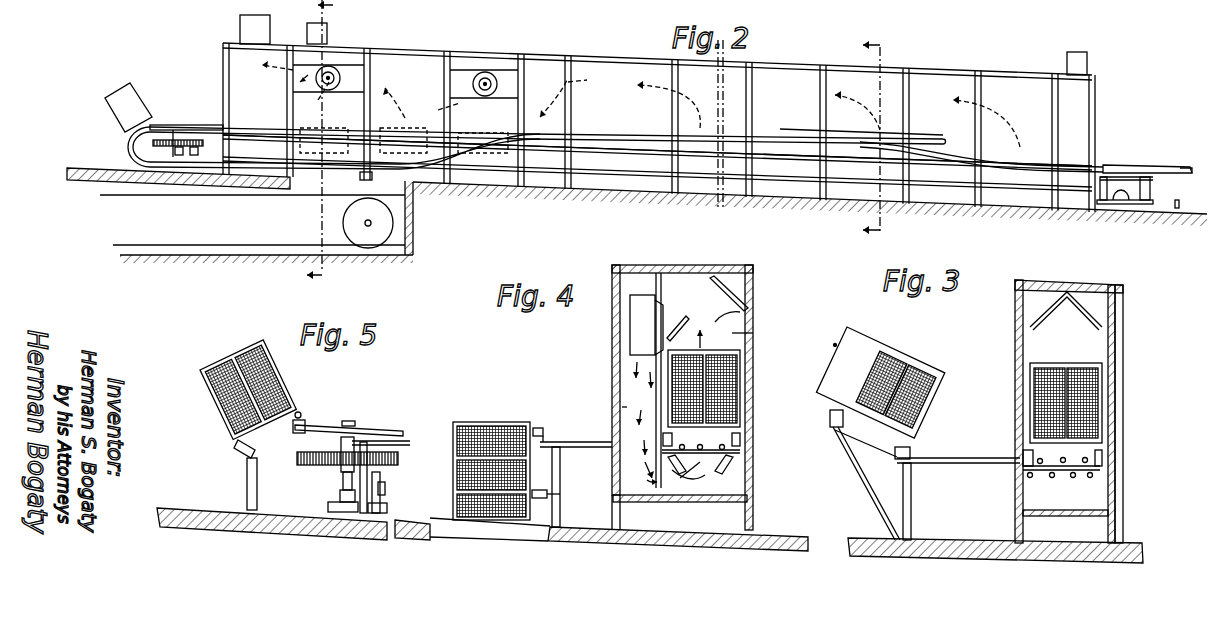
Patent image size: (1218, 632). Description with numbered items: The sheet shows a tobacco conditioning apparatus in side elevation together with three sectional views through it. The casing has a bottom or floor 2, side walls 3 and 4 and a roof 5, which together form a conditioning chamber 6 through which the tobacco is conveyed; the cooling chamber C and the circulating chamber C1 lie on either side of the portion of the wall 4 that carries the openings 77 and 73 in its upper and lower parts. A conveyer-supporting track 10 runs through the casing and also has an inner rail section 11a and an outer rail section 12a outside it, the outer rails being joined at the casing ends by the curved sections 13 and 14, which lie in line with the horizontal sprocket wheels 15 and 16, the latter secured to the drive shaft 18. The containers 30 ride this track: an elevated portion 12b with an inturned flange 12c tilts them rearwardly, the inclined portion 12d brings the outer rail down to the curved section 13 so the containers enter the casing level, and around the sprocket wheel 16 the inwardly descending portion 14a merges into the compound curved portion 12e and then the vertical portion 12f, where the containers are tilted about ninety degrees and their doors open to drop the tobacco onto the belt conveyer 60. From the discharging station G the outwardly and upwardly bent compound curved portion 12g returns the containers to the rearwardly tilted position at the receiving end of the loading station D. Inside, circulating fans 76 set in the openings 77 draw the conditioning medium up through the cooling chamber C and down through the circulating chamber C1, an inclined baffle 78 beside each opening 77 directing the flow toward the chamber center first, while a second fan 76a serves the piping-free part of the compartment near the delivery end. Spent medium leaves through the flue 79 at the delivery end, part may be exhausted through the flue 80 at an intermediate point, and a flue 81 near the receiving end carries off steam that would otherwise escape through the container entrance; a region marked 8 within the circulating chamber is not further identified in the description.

In FIG. 3, the bottom or floor 2 is at (1083, 519).
In FIG. 2, the side wall 3 is at (877, 144).
In FIG. 3, the side wall 3 is at (1123, 402).
In FIG. 2, the side wall 4 is at (320, 149).
In FIG. 3, the side wall 4 is at (1016, 395).
In FIG. 3, the roof 5 is at (1073, 283).
In FIG. 3, the conditioning chamber 6 is at (1066, 311).
In FIG. 4, the air passage 8 is at (644, 392).
In FIG. 3, the conveyer-supporting track 10 is at (1080, 457).
In FIG. 2, the inner rail section 11a is at (613, 154).
In FIG. 4, the inner rail section 11a is at (563, 431).
In FIG. 3, the inner rail section 11a is at (907, 470).
In FIG. 2, the outer rail section 12a is at (618, 130).
In FIG. 2, the elevated portion of outer rail 12b is at (784, 137).
In FIG. 3, the elevated portion of outer rail 12b is at (832, 421).
In FIG. 3, the inturned flange 12c is at (841, 408).
In FIG. 2, the inclined portion of outer rail 12d is at (1002, 155).
In FIG. 2, the compound curved portion of outer rail 12e is at (160, 168).
In FIG. 2, the vertical portion of outer rail 12f is at (376, 181).
In FIG. 4, the vertical portion of outer rail 12f is at (590, 505).
In FIG. 2, the outwardly and upwardly bent compound curved portion 12g is at (480, 166).
In FIG. 2, the curved section of outer rail 13 is at (1186, 167).
In FIG. 5, the curved section of outer rail 14 is at (237, 458).
In FIG. 2, the inwardly descending portion of curved end 14a is at (130, 146).
In FIG. 2, the sprocket wheel 15 is at (1118, 166).
In FIG. 2, the sprocket wheel 16 is at (168, 125).
In FIG. 5, the sprocket wheel 16 is at (378, 428).
In FIG. 5, the drive shaft 18 is at (350, 421).
In FIG. 2, the container 30 is at (125, 95).
In FIG. 4, the container 30 is at (487, 435).
In FIG. 3, the container 30 is at (1083, 365).
In FIG. 5, the container 30 is at (277, 388).
In FIG. 2, the belt conveyer 60 is at (307, 206).
In FIG. 2, the opening 73 is at (350, 126).
In FIG. 4, the opening 73 is at (647, 480).
In FIG. 2, the circulating fan 76 is at (485, 72).
In FIG. 4, the circulating fan 76 is at (633, 323).
In FIG. 2, the second fan 76a is at (336, 70).
In FIG. 4, the opening 77 is at (672, 310).
In FIG. 4, the inclined baffle 78 is at (674, 336).
In FIG. 2, the flue 79 is at (240, 30).
In FIG. 2, the flue 80 is at (327, 38).
In FIG. 2, the flue 81 is at (1067, 58).
In FIG. 4, the cooling chamber C is at (755, 335).
In FIG. 4, the circulating chamber C1 is at (627, 410).
In FIG. 2, the discharging station G is at (350, 7).
In FIG. 2, the loading station D is at (765, 9).